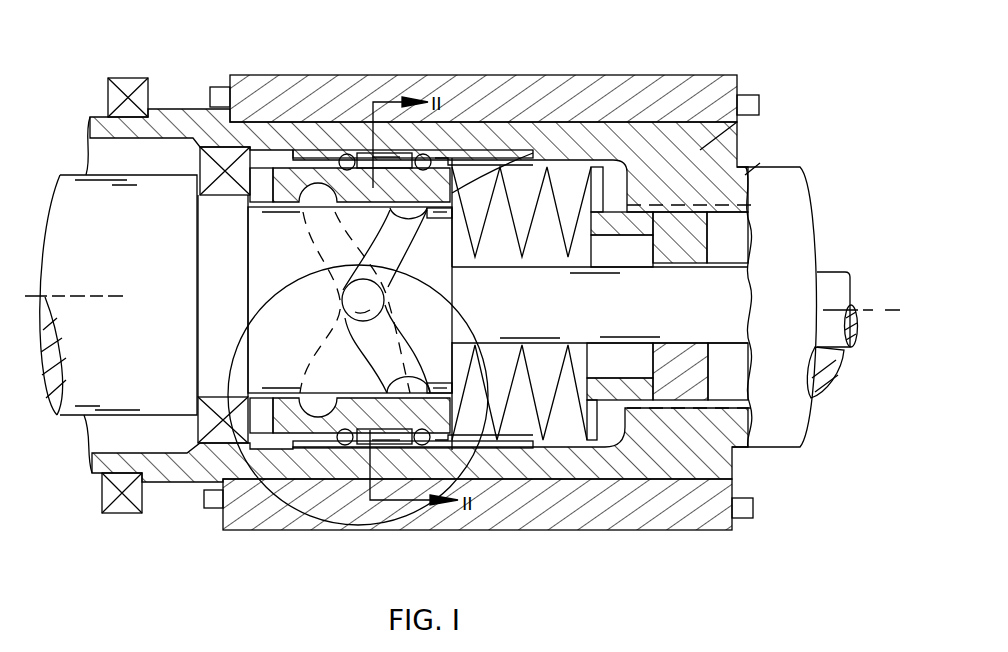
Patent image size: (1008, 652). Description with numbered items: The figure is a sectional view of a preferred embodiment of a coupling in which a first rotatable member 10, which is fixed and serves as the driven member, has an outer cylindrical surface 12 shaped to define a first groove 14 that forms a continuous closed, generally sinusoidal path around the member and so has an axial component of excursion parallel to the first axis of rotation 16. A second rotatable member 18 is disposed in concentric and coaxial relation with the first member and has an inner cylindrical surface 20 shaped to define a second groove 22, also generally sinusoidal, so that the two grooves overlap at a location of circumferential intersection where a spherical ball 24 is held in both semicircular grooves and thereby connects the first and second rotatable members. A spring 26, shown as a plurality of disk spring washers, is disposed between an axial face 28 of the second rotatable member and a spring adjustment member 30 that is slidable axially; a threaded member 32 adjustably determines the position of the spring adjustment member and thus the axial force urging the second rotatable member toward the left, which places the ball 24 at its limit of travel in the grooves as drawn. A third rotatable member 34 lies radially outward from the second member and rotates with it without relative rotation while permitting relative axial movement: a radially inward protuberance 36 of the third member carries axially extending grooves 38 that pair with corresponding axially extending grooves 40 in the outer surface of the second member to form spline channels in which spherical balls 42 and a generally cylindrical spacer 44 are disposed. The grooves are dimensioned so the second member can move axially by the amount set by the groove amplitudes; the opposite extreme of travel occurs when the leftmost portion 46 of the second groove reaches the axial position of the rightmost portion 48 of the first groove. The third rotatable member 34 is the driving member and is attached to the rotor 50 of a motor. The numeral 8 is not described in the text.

The flange plate 8 is at (235, 300).
The first rotatable member 10 is at (62, 402).
The outer cylindrical surface 12 is at (220, 453).
The first groove 14 is at (410, 364).
The first axis of rotation 16 is at (105, 295).
The second rotatable member 18 is at (440, 442).
The inner cylindrical surface 20 is at (432, 213).
The second groove 22 is at (318, 258).
The spherical ball 24 is at (372, 298).
The spring 26 is at (550, 187).
The axial face 28 is at (522, 157).
The spring adjustment member 30 is at (658, 207).
The threaded member 32 is at (700, 377).
The third rotatable member 34 is at (103, 123).
The radially inward protuberance 36 is at (452, 193).
The axially extending grooves 38 is at (456, 152).
The axially extending grooves 40 is at (318, 182).
The spherical balls 42 is at (345, 153).
The cylindrical spacer 44 is at (385, 152).
The leftmost portion of the second groove 46 is at (217, 86).
The rightmost portion of the first groove 48 is at (340, 285).
The rotor 50 is at (720, 515).